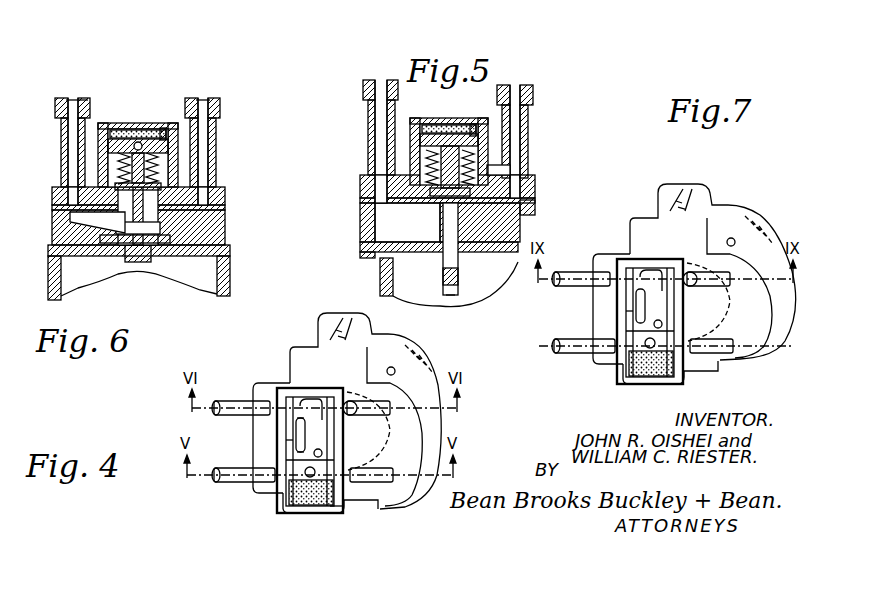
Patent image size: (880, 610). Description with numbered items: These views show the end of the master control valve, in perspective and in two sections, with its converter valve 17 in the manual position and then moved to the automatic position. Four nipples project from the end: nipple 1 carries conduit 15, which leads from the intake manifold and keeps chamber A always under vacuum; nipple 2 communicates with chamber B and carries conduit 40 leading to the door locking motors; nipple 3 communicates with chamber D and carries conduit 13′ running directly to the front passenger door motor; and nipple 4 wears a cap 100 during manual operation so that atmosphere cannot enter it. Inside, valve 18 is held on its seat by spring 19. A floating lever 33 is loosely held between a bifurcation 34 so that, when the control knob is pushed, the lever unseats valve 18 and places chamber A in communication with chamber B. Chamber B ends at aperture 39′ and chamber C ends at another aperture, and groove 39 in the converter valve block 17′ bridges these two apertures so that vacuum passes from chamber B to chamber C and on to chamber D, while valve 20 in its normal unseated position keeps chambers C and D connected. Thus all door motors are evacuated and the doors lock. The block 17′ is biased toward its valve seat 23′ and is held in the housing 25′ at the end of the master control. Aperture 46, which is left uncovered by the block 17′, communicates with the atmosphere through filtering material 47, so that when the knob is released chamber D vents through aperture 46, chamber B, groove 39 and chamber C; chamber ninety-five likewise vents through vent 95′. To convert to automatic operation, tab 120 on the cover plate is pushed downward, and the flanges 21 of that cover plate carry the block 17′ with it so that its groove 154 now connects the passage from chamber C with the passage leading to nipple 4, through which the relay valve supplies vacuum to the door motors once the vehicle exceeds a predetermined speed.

In FIG. 5, the nipple 1 is at (368, 148).
In FIG. 4, the nipple 1 is at (220, 481).
In FIG. 7, the nipple 1 is at (579, 364).
In FIG. 5, the nipple 2 is at (530, 152).
In FIG. 4, the nipple 2 is at (380, 484).
In FIG. 7, the nipple 2 is at (714, 363).
In FIG. 6, the nipple 3 is at (61, 151).
In FIG. 4, the nipple 3 is at (233, 400).
In FIG. 7, the nipple 3 is at (581, 264).
In FIG. 6, the nipple 4 is at (216, 150).
In FIG. 4, the nipple 4 is at (366, 402).
In FIG. 7, the nipple 4 is at (707, 260).
In FIG. 6, the conduit 13′ is at (85, 108).
In FIG. 5, the conduit 15 is at (363, 90).
In FIG. 4, the converter valve 17 is at (288, 445).
In FIG. 7, the converter valve 17 is at (607, 353).
In FIG. 6, the converter valve block 17′ is at (118, 128).
In FIG. 5, the converter valve block 17′ is at (418, 125).
In FIG. 5, the valve 18 is at (441, 208).
In FIG. 5, the spring 19 is at (478, 168).
In FIG. 6, the valve 20 is at (161, 186).
In FIG. 6, the diaphragm backing block 21 is at (160, 150).
In FIG. 4, the valve seat 23′ is at (296, 487).
In FIG. 4, the housing 25′ is at (340, 513).
In FIG. 5, the floating lever 33 is at (448, 296).
In FIG. 5, the bifurcation 34 is at (443, 280).
In FIG. 4, the groove 39 is at (296, 436).
In FIG. 7, the groove 39 is at (619, 308).
In FIG. 4, the aperture 39′ is at (300, 450).
In FIG. 5, the conduit 40 is at (533, 95).
In FIG. 4, the aperture 46 is at (315, 475).
In FIG. 7, the aperture 46 is at (680, 370).
In FIG. 4, the filtering material 47 is at (290, 505).
In FIG. 4, the vent 95′ is at (395, 368).
In FIG. 7, the vent 95′ is at (761, 219).
In FIG. 6, the cap 100 is at (205, 100).
In FIG. 4, the cap 100 is at (352, 400).
In FIG. 6, the tab 120 is at (165, 126).
In FIG. 5, the tab 120 is at (471, 122).
In FIG. 6, the groove 154 is at (140, 130).
In FIG. 5, the groove 154 is at (449, 129).
In FIG. 4, the groove 154 is at (311, 402).
In FIG. 7, the groove 154 is at (657, 276).
In FIG. 5, the chamber A is at (405, 227).
In FIG. 5, the chamber B is at (427, 156).
In FIG. 6, the chamber C is at (120, 162).
In FIG. 6, the chamber D is at (72, 220).